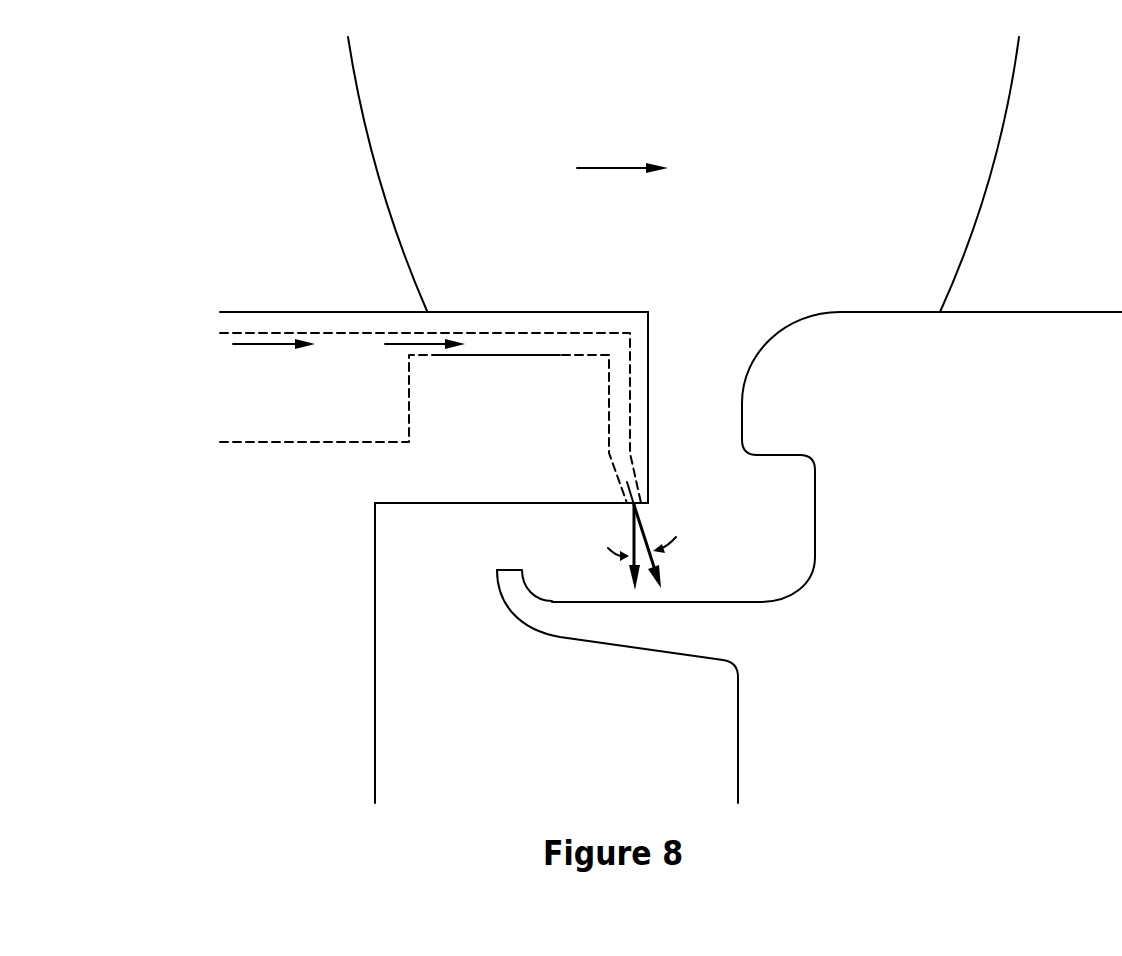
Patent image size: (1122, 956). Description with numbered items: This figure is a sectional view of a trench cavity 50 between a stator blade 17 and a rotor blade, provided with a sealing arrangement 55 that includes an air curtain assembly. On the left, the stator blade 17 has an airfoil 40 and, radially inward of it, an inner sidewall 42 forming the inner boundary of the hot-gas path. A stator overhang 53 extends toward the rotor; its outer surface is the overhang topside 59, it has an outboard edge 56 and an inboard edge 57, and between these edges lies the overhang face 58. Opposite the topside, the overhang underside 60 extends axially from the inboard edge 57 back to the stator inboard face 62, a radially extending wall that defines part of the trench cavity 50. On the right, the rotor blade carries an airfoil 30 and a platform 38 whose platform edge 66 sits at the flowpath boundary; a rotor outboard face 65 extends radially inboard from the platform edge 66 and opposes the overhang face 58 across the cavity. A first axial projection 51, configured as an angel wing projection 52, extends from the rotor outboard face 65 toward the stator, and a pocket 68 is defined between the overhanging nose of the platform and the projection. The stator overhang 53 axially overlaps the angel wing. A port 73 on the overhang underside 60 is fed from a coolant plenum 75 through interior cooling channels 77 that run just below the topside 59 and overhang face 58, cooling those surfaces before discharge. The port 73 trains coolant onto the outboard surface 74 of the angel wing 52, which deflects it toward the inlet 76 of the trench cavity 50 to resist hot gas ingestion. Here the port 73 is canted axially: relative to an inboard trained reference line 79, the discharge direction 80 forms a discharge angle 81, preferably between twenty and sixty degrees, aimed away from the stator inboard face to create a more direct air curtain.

The stator blade 17 is at (234, 198).
The airfoil 30 is at (1071, 206).
The platform 38 is at (990, 311).
The airfoil 40 is at (329, 189).
The inner sidewall 42 is at (313, 311).
The trench cavity 50 is at (576, 731).
The first axial projection 51 is at (601, 632).
The angel wing projection 52 is at (716, 638).
The stator overhang 53 is at (552, 429).
The sealing arrangement 55 is at (795, 400).
The outboard edge 56 is at (648, 311).
The inboard edge 57 is at (648, 503).
The overhang face 58 is at (648, 403).
The overhang topside 59 is at (515, 311).
The overhang underside 60 is at (432, 503).
The stator inboard face 62 is at (375, 717).
The rotor outboard face 65 is at (885, 512).
The platform edge 66 is at (782, 326).
The pocket 68 is at (797, 524).
The port 73 is at (632, 507).
The outboard surface 74 is at (682, 602).
The coolant plenum 75 is at (354, 412).
The inlet 76 is at (724, 334).
The interior cooling channels 77 is at (502, 345).
The inboard trained reference line 79 is at (633, 532).
The discharge direction 80 is at (637, 523).
The discharge angle 81 is at (643, 558).